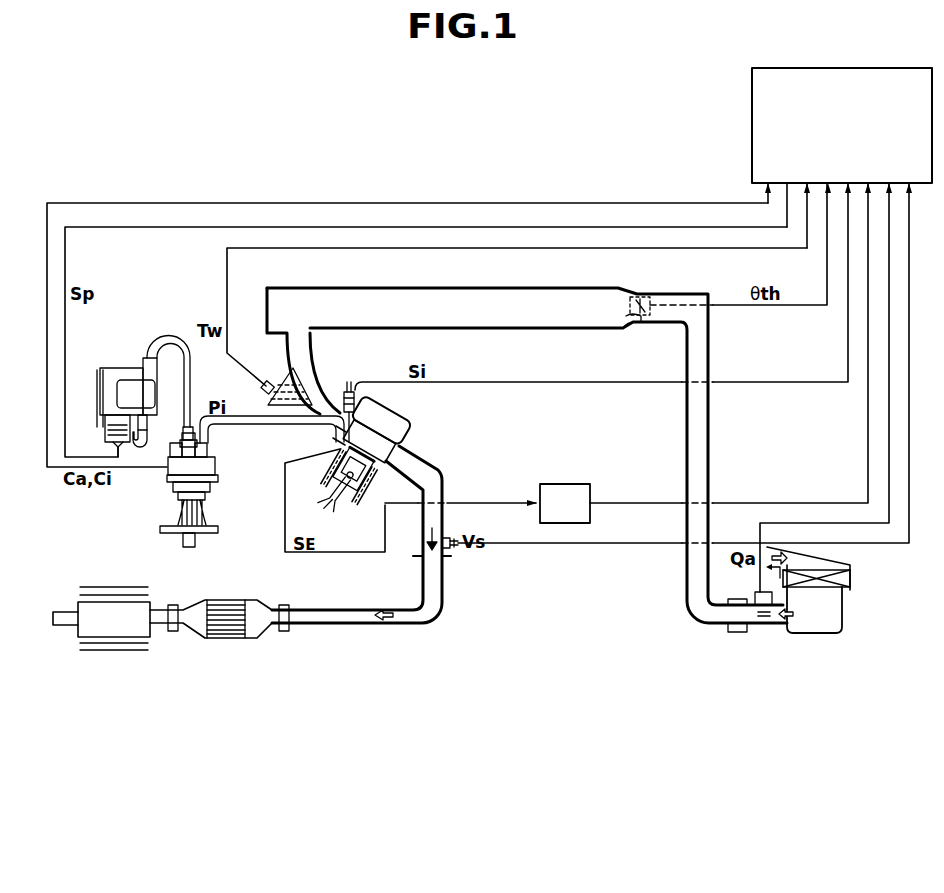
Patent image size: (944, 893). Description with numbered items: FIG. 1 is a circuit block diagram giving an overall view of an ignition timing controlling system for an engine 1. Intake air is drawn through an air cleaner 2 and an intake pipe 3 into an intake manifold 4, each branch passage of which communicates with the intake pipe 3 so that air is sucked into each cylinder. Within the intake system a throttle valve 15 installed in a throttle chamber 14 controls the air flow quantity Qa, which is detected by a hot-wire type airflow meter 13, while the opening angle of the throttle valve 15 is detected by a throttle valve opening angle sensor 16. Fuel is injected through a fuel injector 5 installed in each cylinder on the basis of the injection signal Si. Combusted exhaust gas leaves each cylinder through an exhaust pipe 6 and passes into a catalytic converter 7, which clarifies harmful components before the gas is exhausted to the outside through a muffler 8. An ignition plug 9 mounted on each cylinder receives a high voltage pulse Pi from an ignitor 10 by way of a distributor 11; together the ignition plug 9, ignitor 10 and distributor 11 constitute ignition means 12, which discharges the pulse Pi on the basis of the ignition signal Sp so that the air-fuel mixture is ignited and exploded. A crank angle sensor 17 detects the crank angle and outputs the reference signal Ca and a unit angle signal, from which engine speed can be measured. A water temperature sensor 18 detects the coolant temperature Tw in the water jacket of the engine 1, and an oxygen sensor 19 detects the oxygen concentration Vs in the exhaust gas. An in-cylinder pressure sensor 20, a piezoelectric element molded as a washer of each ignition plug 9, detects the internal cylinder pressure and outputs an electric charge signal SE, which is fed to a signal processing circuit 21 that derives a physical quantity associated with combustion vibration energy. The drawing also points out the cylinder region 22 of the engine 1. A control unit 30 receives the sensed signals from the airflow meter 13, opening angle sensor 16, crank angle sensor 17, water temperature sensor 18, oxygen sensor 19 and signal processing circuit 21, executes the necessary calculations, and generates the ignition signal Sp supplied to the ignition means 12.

The engine 1 is at (364, 473).
The air cleaner 2 is at (852, 585).
The intake pipe 3 is at (712, 444).
The intake manifold 4 is at (315, 354).
The fuel injector 5 is at (347, 390).
The exhaust pipe 6 is at (445, 600).
The catalytic converter 7 is at (232, 600).
The muffler 8 is at (117, 602).
The ignition plug 9 is at (340, 432).
The ignitor 10 is at (116, 368).
The distributor 11 is at (215, 470).
The ignition means 12 is at (168, 493).
The airflow meter 13 is at (756, 594).
The throttle chamber 14 is at (656, 328).
The throttle valve 15 is at (628, 318).
The throttle valve opening angle sensor 16 is at (652, 300).
The crank angle sensor 17 is at (167, 465).
The water temperature sensor 18 is at (262, 386).
The oxygen sensor 19 is at (456, 548).
The in-cylinder pressure sensor 20 is at (338, 442).
The signal processing circuit 21 is at (555, 484).
The cylinder 22 is at (261, 486).
The control unit 30 is at (848, 68).